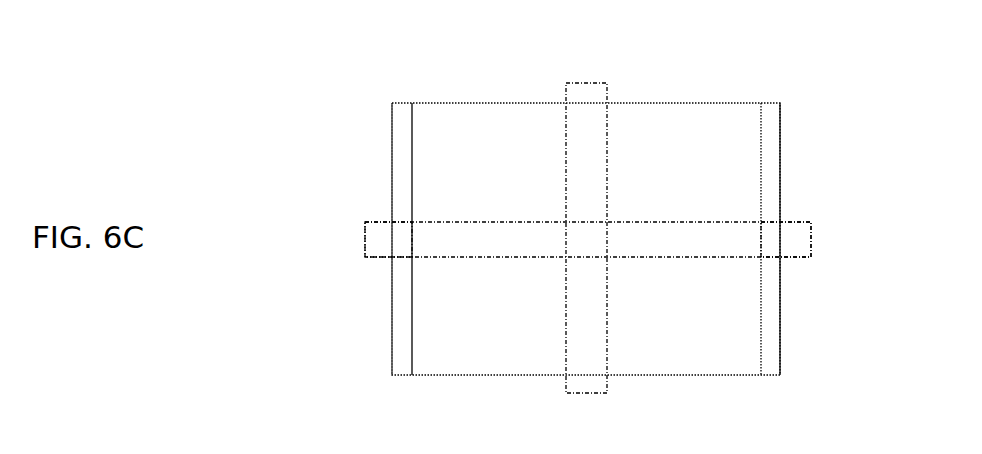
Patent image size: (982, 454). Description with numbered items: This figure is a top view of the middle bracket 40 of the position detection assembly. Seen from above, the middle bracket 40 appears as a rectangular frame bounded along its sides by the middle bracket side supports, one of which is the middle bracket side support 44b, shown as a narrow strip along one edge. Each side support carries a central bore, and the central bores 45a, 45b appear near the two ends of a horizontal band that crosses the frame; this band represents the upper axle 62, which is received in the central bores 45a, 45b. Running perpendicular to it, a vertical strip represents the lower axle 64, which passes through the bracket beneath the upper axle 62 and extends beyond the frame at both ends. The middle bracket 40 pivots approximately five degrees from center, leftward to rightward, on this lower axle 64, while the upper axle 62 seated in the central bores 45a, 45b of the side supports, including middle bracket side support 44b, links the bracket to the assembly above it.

The middle bracket 40 is at (272, 223).
The middle bracket side support 44b is at (402, 102).
The lower axle 64 is at (583, 82).
The upper axle 62 is at (808, 243).
The central bore 45a is at (400, 238).
The central bore 45b is at (770, 237).